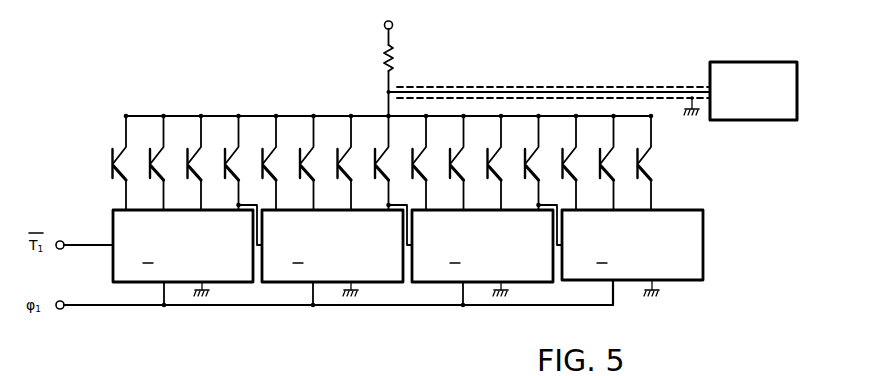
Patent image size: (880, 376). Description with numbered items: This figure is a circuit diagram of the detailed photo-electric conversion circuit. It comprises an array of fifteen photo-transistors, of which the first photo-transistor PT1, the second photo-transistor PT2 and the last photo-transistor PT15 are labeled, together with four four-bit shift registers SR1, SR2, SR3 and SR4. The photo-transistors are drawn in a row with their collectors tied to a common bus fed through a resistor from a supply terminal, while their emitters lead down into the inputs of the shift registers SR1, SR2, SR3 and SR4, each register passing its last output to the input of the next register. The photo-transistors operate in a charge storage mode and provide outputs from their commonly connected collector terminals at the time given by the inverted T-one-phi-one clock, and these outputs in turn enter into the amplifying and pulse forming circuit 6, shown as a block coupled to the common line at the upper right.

The amplifying and pulse forming circuit 6 is at (797, 84).
The photo-transistor PT1 is at (109, 160).
The photo-transistor PT2 is at (146, 160).
The photo-transistor PT15 is at (650, 160).
The four-bit shift register SR1 is at (183, 246).
The four-bit shift register SR2 is at (332, 246).
The four-bit shift register SR3 is at (482, 246).
The four-bit shift register SR4 is at (632, 245).